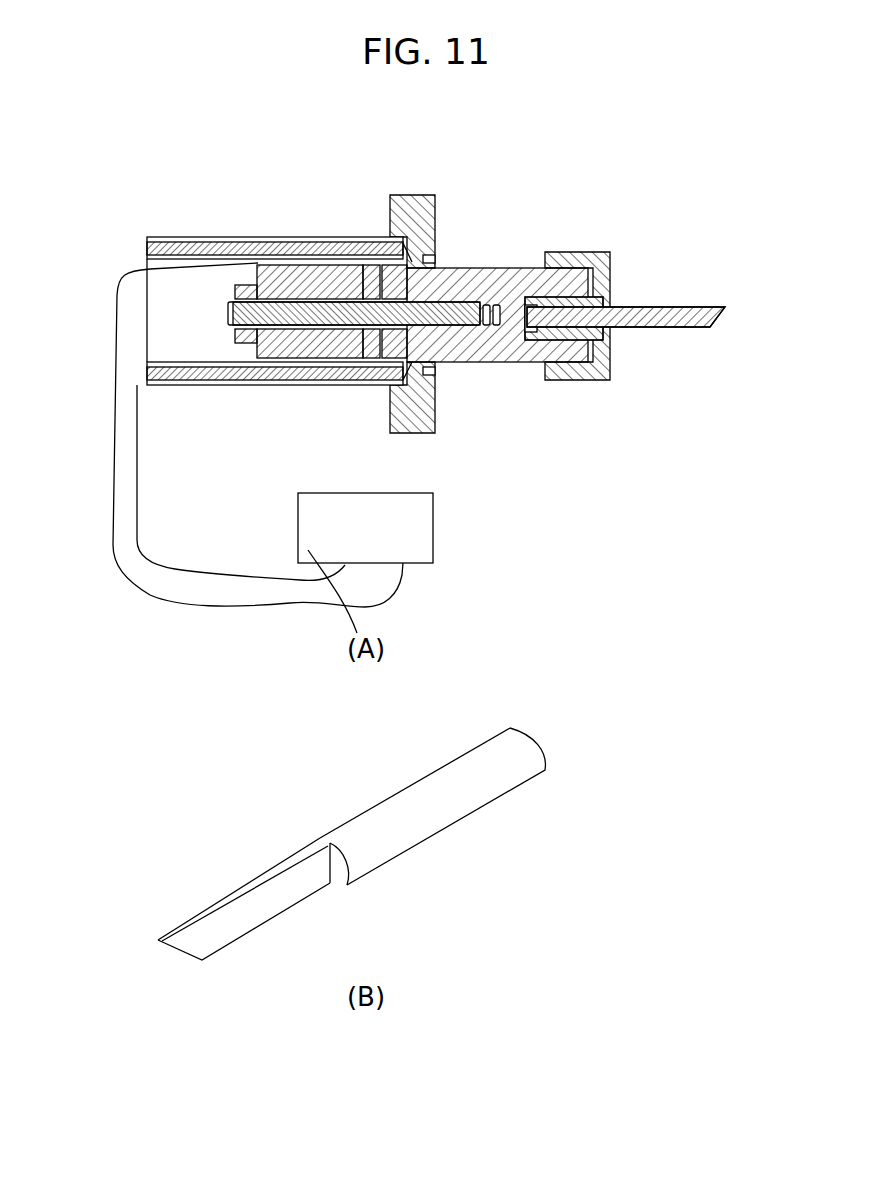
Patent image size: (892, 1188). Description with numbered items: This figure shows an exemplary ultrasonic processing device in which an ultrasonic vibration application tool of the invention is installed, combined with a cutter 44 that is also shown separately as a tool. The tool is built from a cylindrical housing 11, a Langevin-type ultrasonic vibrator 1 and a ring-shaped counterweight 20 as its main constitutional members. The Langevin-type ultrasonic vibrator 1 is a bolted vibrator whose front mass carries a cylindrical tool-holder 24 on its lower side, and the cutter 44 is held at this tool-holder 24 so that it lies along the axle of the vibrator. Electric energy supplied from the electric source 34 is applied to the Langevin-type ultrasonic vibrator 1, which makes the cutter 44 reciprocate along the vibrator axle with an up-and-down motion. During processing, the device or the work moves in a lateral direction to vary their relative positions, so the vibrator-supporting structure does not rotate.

The Langevin-type ultrasonic vibrator 1 is at (323, 280).
The cylindrical housing 11 is at (290, 241).
The ring-shaped counterweight 20 is at (436, 220).
The cylindrical tool-holder 24 is at (510, 282).
The electric source 34 is at (407, 533).
The cutter 44 is at (687, 306).